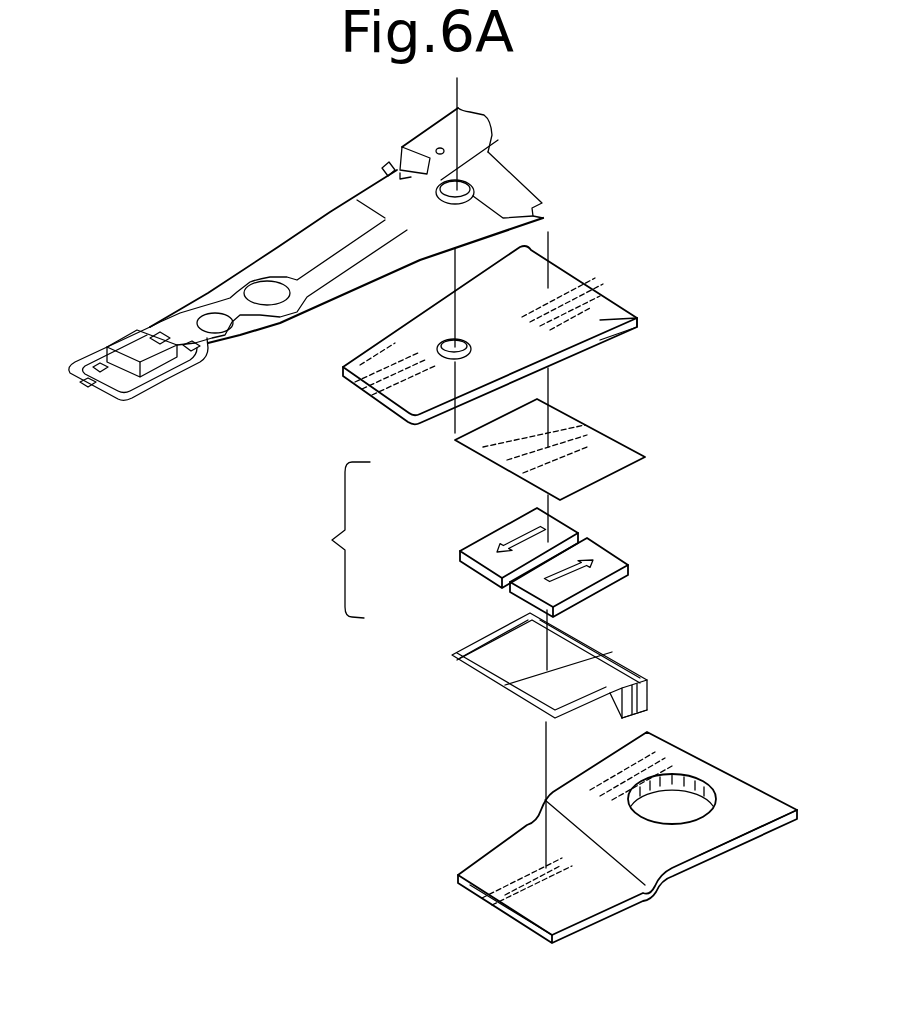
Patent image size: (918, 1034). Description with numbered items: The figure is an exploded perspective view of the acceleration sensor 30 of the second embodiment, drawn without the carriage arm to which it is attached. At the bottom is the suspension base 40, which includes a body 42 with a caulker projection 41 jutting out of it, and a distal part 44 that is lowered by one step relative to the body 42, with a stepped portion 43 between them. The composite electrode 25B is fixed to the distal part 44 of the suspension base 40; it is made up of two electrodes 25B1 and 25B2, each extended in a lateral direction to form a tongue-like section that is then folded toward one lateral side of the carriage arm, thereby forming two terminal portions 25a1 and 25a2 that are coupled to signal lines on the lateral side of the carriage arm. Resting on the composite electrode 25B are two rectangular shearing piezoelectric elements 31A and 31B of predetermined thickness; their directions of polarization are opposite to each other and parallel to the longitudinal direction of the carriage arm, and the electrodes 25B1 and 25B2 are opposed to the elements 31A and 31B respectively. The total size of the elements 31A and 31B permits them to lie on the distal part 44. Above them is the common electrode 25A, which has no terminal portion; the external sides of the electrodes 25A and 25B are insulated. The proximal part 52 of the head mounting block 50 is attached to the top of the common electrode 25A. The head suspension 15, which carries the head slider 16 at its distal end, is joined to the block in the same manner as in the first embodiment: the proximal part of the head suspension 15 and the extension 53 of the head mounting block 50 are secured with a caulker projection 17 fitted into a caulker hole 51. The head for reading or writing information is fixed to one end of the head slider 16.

The head suspension 15 is at (278, 247).
The head slider 16 is at (137, 345).
The caulker projection 17 is at (490, 175).
The head mounting block 50 is at (583, 276).
The caulker hole 51 is at (445, 353).
The proximal part 52 is at (612, 316).
The extension 53 is at (388, 345).
The acceleration sensor 30 is at (331, 540).
The common electrode 25A is at (513, 462).
The shearing piezoelectric element 31A is at (460, 557).
The shearing piezoelectric element 31B is at (513, 596).
The composite electrode 25B is at (495, 697).
The electrode 25B1 is at (517, 645).
The electrode 25B2 is at (570, 680).
The terminal portion 25a1 is at (647, 690).
The terminal portion 25a2 is at (617, 717).
The suspension base 40 is at (703, 765).
The caulker projection 41 is at (686, 793).
The body 42 is at (750, 828).
The stepped portion 43 is at (645, 883).
The distal part 44 is at (602, 895).